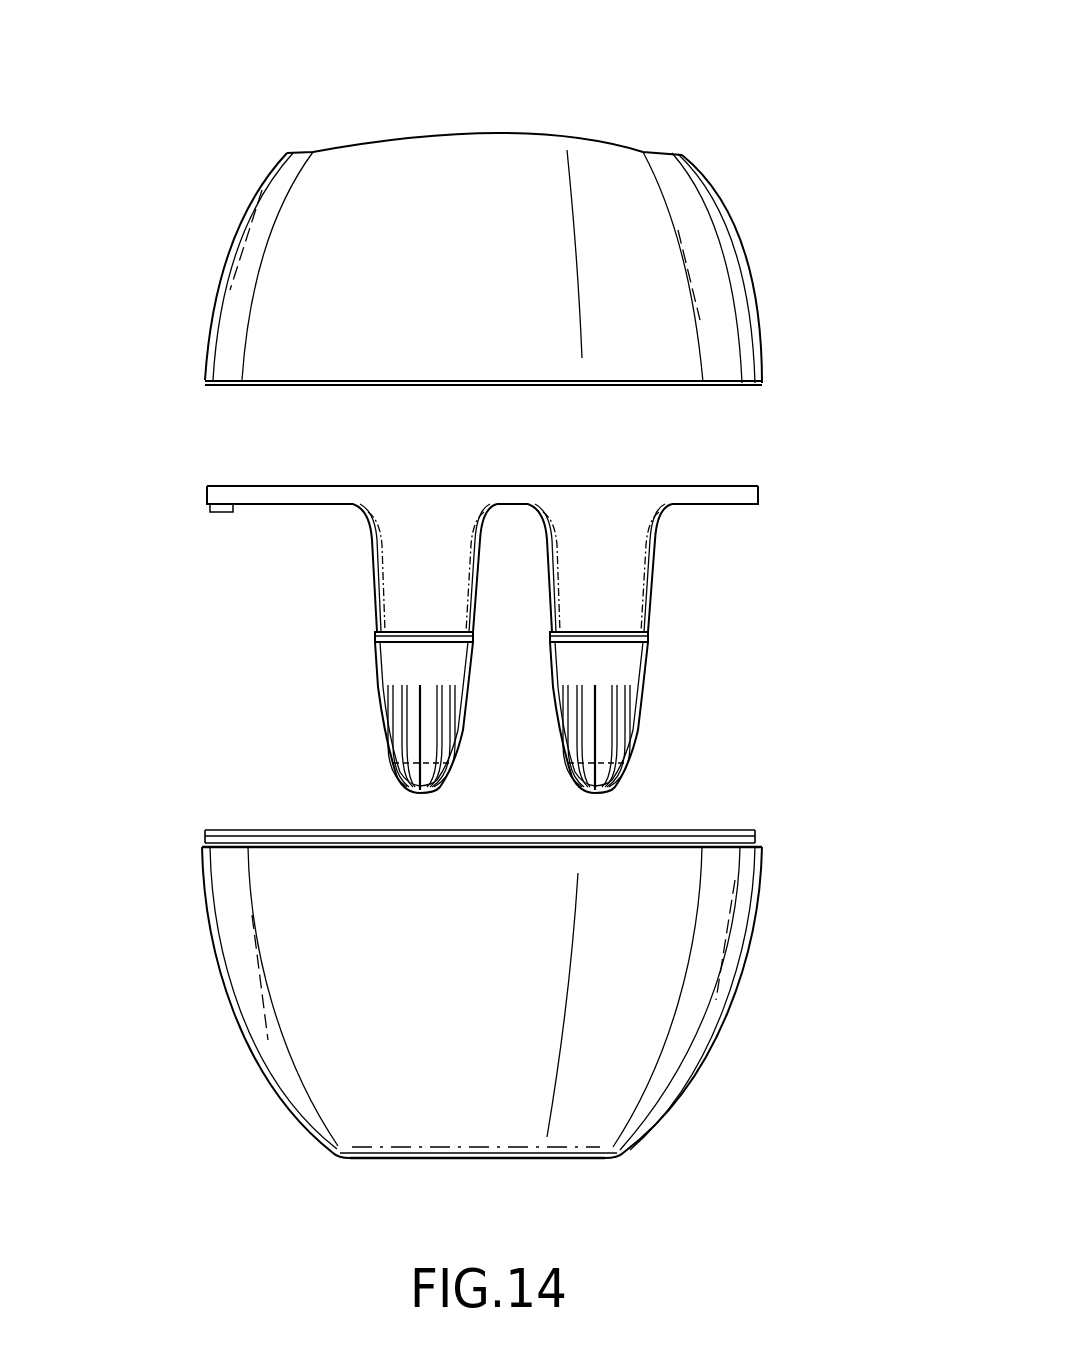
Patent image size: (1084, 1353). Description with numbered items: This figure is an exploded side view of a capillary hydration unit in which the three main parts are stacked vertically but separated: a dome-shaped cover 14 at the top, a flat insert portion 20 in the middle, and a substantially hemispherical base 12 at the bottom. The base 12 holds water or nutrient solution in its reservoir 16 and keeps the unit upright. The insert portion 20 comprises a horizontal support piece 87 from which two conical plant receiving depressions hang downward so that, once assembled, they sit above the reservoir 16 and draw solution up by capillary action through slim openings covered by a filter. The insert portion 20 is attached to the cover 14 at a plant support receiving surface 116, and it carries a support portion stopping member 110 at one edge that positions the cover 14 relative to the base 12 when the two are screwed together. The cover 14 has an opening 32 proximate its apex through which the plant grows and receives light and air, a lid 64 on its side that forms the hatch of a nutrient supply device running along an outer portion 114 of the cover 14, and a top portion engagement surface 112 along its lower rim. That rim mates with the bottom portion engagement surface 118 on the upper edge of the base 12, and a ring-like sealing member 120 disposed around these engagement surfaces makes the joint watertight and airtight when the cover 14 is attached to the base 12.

The base 12 is at (780, 927).
The cover 14 is at (783, 245).
The reservoir 16 is at (208, 1000).
The insert portion 20 is at (793, 498).
The opening 32 is at (547, 100).
The lid 64 is at (238, 237).
The horizontal support piece 87 is at (700, 487).
The support portion stopping member 110 is at (208, 508).
The top portion engagement surface 112 is at (747, 390).
The outer portion 114 is at (687, 232).
The plant support receiving surface 116 is at (262, 397).
The bottom portion engagement surface 118 is at (210, 832).
The sealing member 120 is at (763, 847).